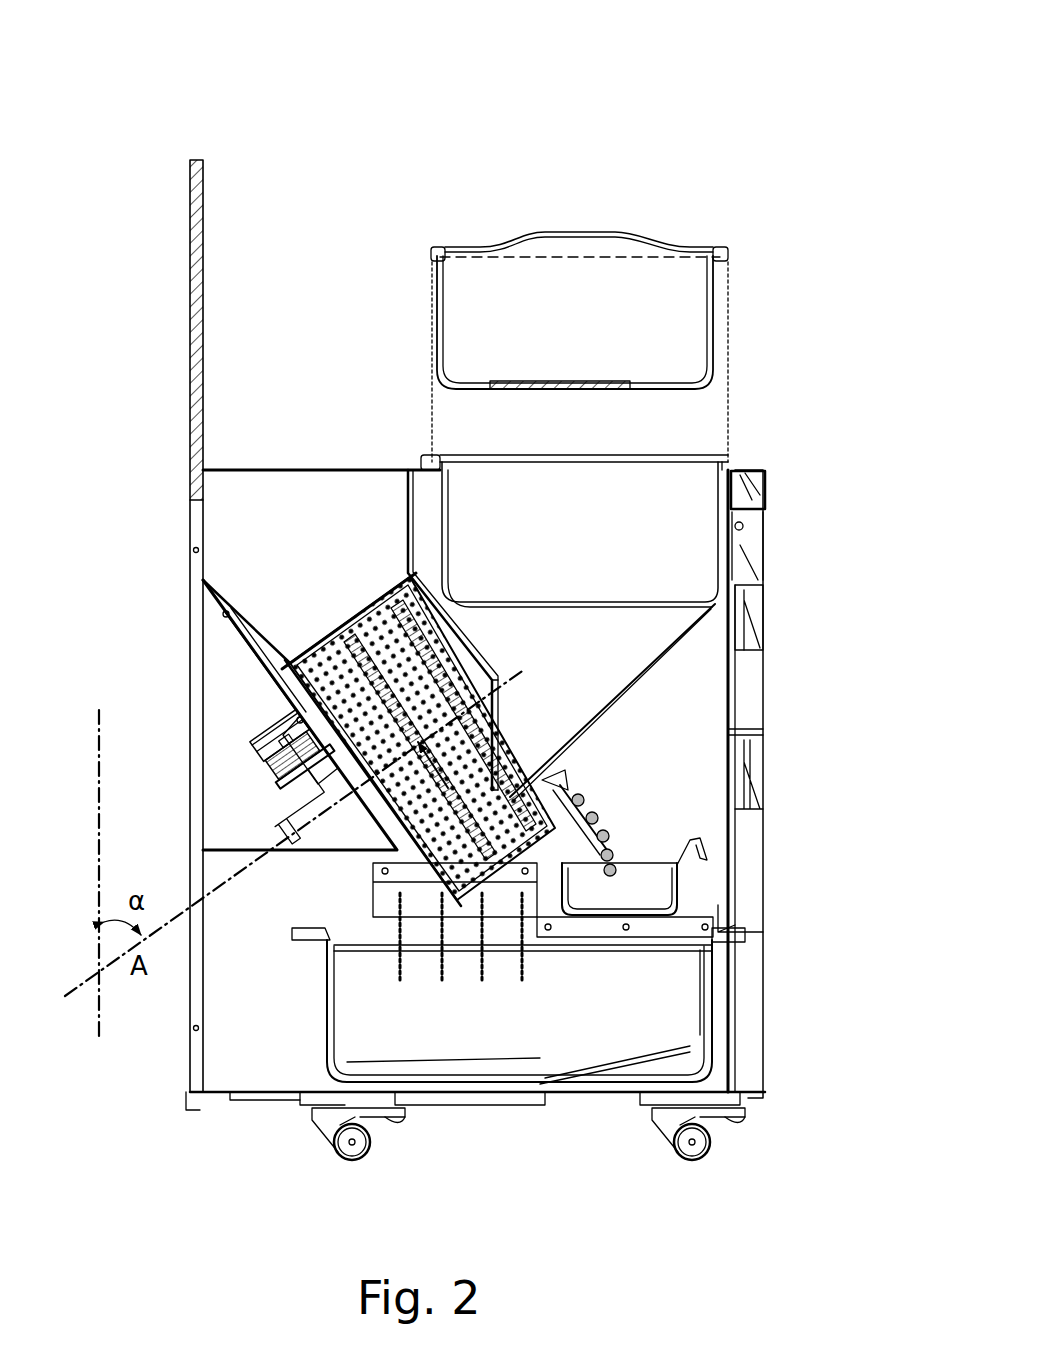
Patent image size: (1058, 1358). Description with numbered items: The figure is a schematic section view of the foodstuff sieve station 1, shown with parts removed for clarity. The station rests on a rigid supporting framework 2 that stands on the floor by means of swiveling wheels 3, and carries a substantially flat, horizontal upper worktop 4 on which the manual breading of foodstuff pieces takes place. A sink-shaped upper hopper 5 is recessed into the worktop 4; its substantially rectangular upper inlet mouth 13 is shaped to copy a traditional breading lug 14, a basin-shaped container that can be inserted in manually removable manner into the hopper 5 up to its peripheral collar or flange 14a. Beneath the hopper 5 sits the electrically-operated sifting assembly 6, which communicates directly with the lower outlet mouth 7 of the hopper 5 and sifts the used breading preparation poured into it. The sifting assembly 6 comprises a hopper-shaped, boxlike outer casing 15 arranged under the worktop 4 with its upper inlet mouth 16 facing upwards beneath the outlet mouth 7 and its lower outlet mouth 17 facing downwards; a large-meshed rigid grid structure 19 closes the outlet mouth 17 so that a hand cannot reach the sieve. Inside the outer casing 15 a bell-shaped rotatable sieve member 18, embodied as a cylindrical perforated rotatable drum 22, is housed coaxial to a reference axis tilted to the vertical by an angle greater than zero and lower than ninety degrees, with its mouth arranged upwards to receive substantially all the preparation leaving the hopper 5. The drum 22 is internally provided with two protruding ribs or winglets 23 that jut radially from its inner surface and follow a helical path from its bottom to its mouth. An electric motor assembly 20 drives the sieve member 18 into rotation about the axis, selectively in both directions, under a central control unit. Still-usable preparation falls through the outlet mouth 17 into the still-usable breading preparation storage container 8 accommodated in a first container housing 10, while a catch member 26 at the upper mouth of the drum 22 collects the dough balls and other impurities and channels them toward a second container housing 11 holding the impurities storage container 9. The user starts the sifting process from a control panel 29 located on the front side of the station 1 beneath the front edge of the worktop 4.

The foodstuff sieve station 1 is at (693, 198).
The rigid supporting framework 2 is at (196, 1058).
The swiveling wheels 3 is at (334, 1152).
The upper worktop 4 is at (275, 466).
The upper hopper 5 is at (440, 522).
The sifting assembly 6 is at (291, 622).
The lower outlet mouth 7 is at (515, 777).
The still-usable breading preparation storage container 8 is at (672, 1022).
The dough balls and other impurities storage container 9 is at (690, 868).
The container housing 10 is at (542, 1085).
The container housing 11 is at (692, 912).
The upper inlet mouth 13 is at (693, 470).
The breading lug 14 is at (572, 247).
The peripheral collar or flange 14a is at (428, 246).
The outer casing 15 is at (297, 650).
The upper inlet mouth 16 is at (457, 665).
The lower outlet mouth 17 is at (460, 923).
The rotatable sieve member 18 is at (427, 870).
The rigid grid structure 19 is at (505, 920).
The electric motor assembly 20 is at (278, 780).
The rotatable drum 22 is at (300, 718).
The protruding ribs or winglets 23 is at (348, 648).
The catch member 26 is at (600, 812).
The control panel 29 is at (758, 531).